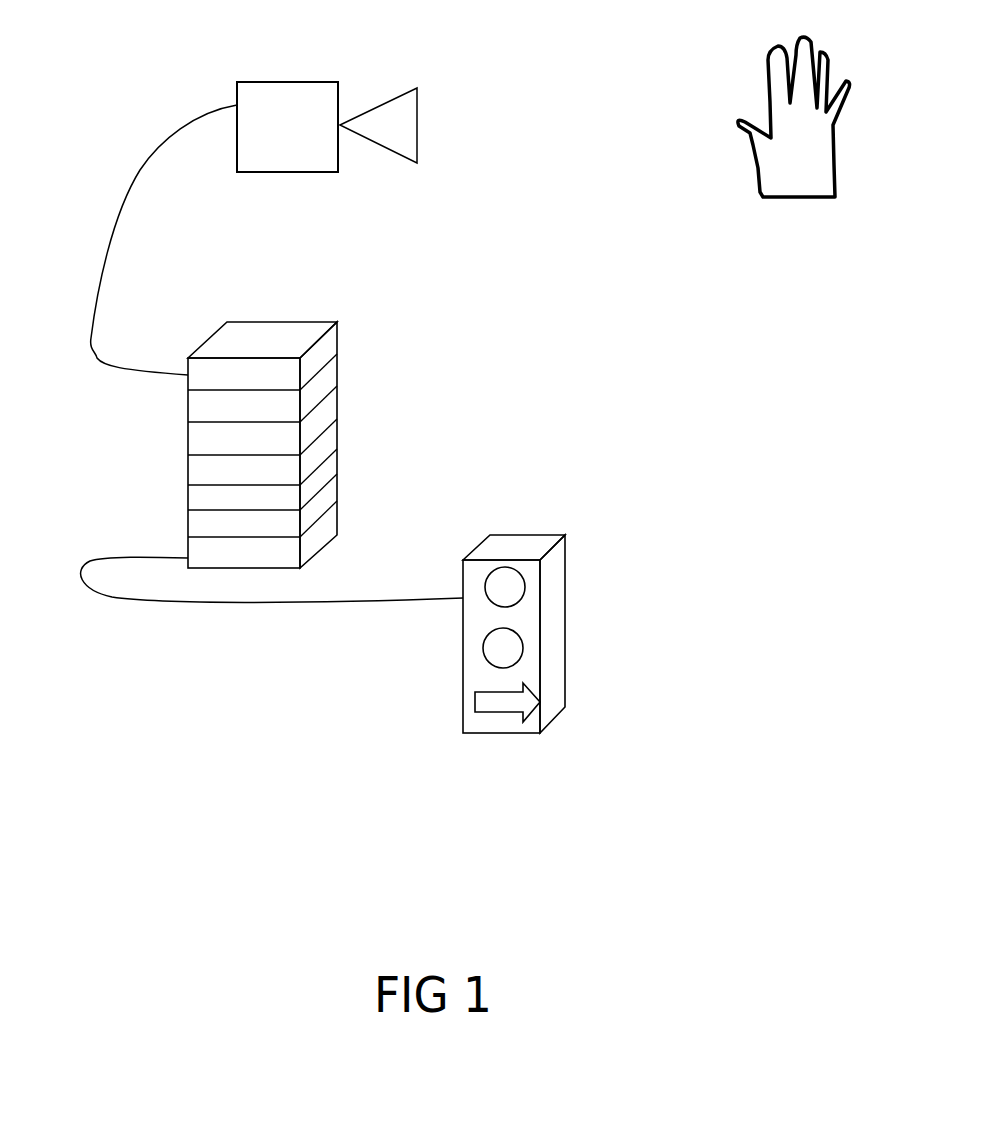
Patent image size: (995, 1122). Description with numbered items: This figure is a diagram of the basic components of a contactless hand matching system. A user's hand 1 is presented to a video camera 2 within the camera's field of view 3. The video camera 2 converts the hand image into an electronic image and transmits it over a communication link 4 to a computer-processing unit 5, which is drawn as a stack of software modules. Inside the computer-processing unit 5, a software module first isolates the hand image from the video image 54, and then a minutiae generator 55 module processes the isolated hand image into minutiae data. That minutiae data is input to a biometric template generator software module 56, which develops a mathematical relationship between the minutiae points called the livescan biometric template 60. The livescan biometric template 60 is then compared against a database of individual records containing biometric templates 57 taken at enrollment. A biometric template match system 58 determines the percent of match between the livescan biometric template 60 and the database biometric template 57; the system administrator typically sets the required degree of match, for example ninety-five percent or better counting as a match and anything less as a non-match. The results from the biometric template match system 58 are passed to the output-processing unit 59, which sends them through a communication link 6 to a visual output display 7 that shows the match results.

The user's hand 1 is at (788, 212).
The video camera 2 is at (226, 92).
The field of view 3 is at (604, 212).
The communication link 4 is at (116, 263).
The computer-processing unit 5 is at (270, 322).
The communication link 6 is at (139, 620).
The visual output display 7 is at (533, 539).
The hand image isolation software module 54 is at (350, 334).
The minutiae generator module 55 is at (176, 403).
The biometric template generator software module 56 is at (350, 397).
The database biometric template 57 is at (176, 467).
The biometric template match system 58 is at (176, 518).
The output-processing unit 59 is at (350, 510).
The livescan biometric template 60 is at (350, 459).